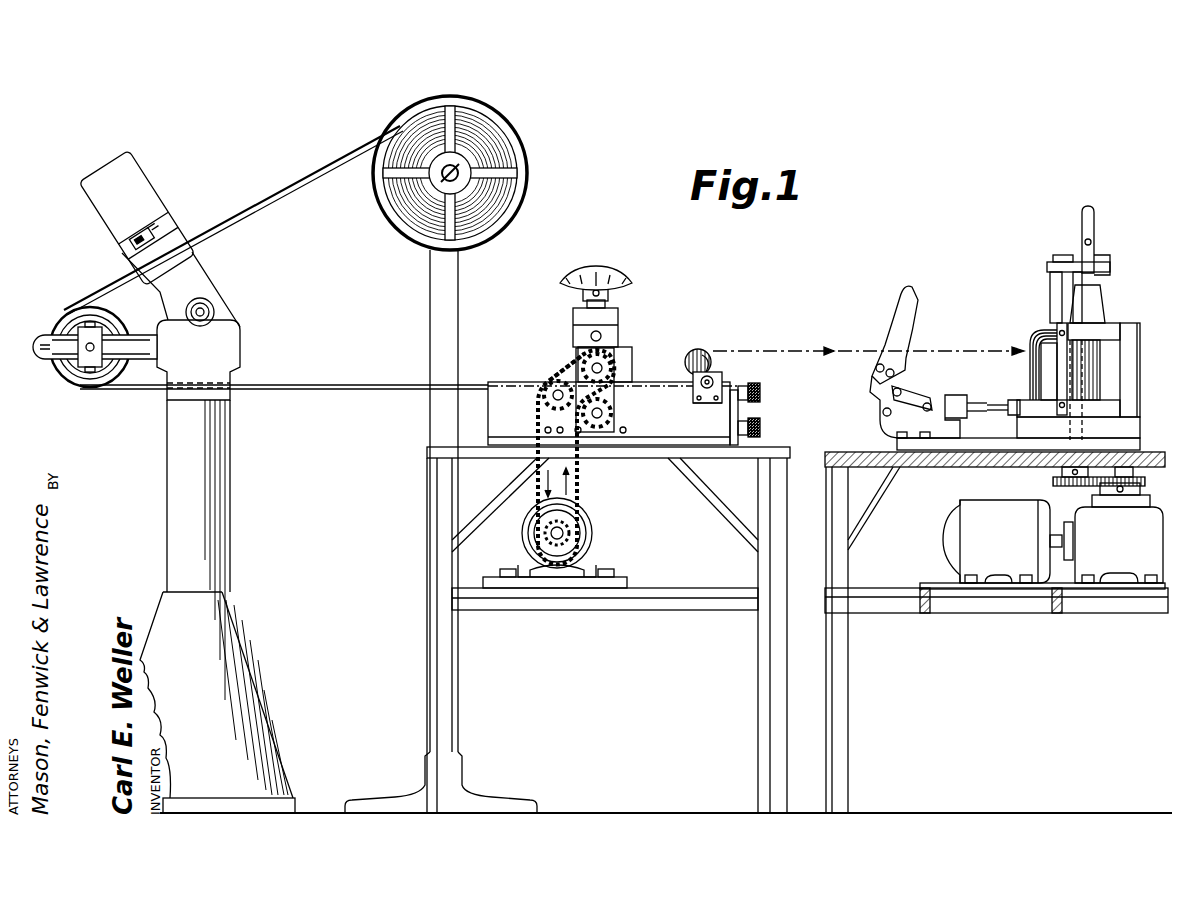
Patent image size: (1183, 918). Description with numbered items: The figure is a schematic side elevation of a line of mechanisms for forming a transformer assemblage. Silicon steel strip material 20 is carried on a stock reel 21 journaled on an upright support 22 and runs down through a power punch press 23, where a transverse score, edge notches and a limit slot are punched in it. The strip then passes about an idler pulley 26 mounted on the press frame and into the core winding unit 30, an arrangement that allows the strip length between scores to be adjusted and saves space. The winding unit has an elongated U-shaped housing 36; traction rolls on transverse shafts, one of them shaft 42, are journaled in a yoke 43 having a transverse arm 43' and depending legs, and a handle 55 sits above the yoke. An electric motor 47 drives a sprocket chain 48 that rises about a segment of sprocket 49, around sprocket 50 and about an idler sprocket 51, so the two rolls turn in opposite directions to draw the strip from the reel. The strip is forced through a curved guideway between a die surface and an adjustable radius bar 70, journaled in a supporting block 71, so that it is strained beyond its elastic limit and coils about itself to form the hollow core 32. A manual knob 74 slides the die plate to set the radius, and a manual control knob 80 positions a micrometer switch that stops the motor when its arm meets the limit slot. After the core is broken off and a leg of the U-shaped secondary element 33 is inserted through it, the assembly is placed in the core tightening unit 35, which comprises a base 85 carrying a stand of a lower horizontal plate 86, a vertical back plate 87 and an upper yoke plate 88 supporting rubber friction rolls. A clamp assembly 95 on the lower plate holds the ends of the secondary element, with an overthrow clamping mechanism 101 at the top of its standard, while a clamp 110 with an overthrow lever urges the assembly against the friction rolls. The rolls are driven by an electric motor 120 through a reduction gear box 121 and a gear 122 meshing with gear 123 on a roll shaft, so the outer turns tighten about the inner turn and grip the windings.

The silicon steel strip material 20 is at (239, 215).
The stock reel 21 is at (514, 144).
The upright support 22 is at (432, 299).
The power punch press 23 is at (208, 293).
The idler pulley 26 is at (68, 318).
The core winding unit 30 is at (640, 340).
The spirally laminated hollow cylindrical core 32 is at (1045, 381).
The U-shaped secondary element 33 is at (1052, 300).
The core tightening unit 35 is at (1022, 327).
The elongated housing 36 is at (528, 392).
The traction roll shaft 42 is at (612, 370).
The yoke 43 is at (623, 358).
The transverse arm 43' is at (579, 323).
The electric motor 47 is at (592, 538).
The sprocket chain 48 is at (580, 485).
The sprocket 49 is at (613, 416).
The sprocket 50 is at (578, 364).
The idler sprocket 51 is at (566, 384).
The handle 55 is at (600, 268).
The adjustable radius bar 70 is at (722, 376).
The supporting block 71 is at (707, 413).
The manual knob 74 is at (760, 393).
The manual control knob 80 is at (760, 428).
The base 85 is at (897, 445).
The lower horizontal plate 86 is at (1135, 430).
The vertical back plate 87 is at (1133, 393).
The upper horizontal yoke plate 88 is at (1124, 331).
The clamp assembly 95 is at (1105, 310).
The overthrow clamping mechanism 101 is at (1082, 226).
The clamp 110 is at (880, 316).
The electric motor 120 is at (967, 545).
The reduction gear box 121 is at (1120, 565).
The gear 122 is at (1130, 496).
The gear 123 is at (1052, 481).